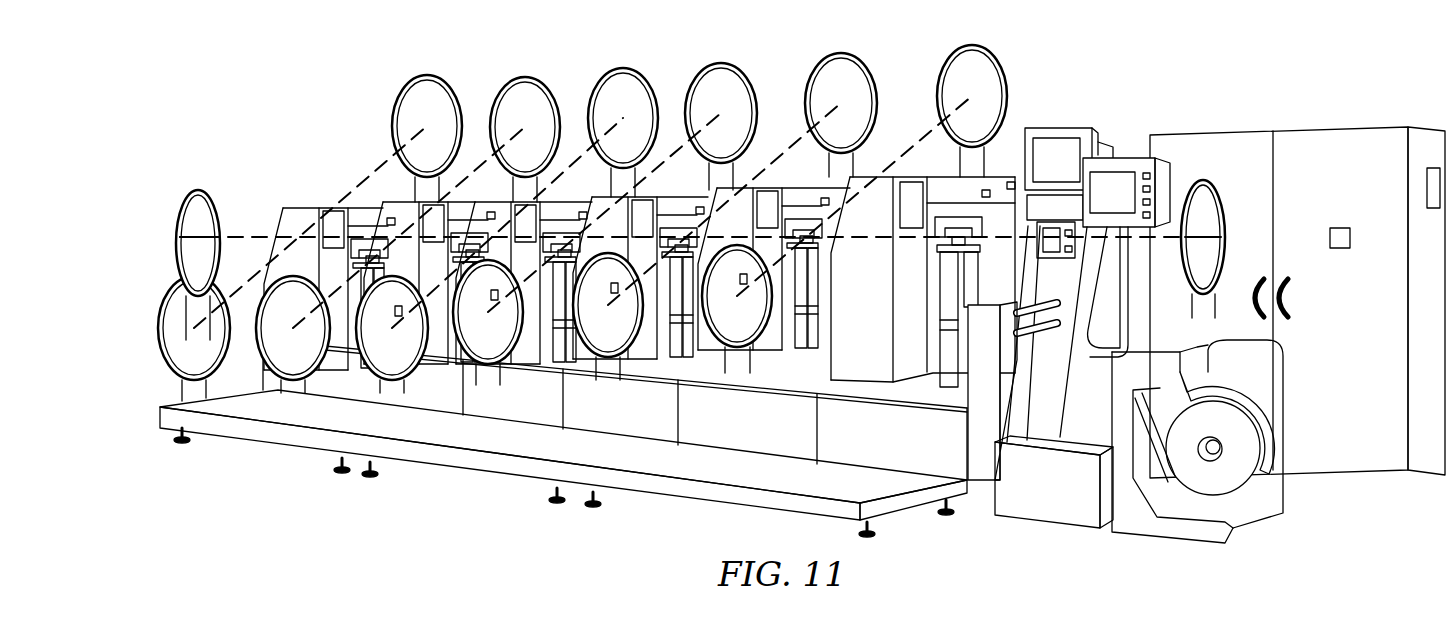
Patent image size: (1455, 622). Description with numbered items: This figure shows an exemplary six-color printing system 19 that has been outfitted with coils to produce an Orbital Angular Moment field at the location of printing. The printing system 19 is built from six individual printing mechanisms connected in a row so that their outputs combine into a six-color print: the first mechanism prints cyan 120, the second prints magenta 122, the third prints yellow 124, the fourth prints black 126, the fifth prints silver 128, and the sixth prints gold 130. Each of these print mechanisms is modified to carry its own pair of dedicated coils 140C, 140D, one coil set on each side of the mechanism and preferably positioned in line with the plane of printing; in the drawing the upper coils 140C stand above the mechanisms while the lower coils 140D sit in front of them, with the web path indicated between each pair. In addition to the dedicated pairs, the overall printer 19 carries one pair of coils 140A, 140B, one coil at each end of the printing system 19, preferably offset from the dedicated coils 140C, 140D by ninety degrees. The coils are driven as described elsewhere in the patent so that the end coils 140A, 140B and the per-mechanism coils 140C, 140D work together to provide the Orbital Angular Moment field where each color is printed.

The printing system 19 is at (1062, 72).
The cyan 120 is at (292, 223).
The magenta 122 is at (393, 213).
The yellow 124 is at (498, 215).
The black 126 is at (603, 205).
The silver 128 is at (733, 205).
The gold 130 is at (860, 197).
The coil 140A is at (178, 208).
The coil 140B is at (1227, 227).
The dedicated coil 140C is at (435, 73).
The dedicated coil 140D is at (164, 298).